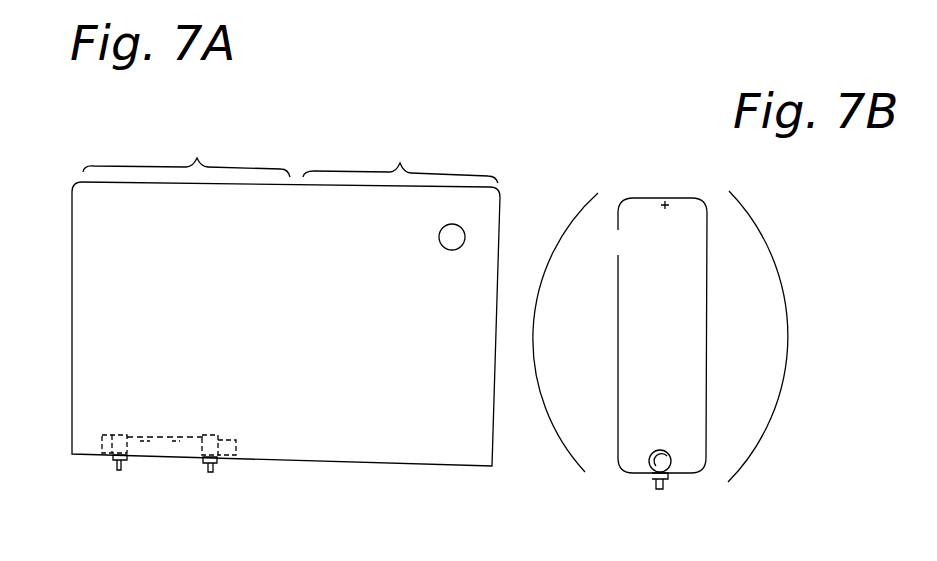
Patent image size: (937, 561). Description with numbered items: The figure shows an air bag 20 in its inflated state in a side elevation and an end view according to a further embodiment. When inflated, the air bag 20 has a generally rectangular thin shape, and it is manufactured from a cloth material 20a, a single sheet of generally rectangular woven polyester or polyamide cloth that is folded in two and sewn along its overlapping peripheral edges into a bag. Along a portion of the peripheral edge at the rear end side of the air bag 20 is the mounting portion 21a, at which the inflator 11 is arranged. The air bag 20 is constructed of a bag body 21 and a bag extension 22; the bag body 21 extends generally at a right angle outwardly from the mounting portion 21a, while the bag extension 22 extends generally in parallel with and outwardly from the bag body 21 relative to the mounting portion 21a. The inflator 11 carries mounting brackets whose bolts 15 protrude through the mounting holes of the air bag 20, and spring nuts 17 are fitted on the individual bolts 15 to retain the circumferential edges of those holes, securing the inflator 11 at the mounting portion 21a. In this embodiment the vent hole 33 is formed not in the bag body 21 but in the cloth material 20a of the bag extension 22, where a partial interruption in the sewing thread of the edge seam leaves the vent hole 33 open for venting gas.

In FIG. 7A, the air bag 20 is at (62, 318).
In FIG. 7B, the air bag 20 is at (608, 362).
In FIG. 7B, the cloth material 20a is at (620, 308).
In FIG. 7A, the bag body 21 is at (186, 151).
In FIG. 7A, the mounting portion 21a is at (190, 459).
In FIG. 7B, the mounting portion 21a is at (672, 474).
In FIG. 7A, the bag extension 22 is at (400, 157).
In FIG. 7A, the vent hole 33 is at (464, 237).
In FIG. 7B, the vent hole 33 is at (618, 248).
In FIG. 7A, the inflator 11 is at (150, 432).
In FIG. 7B, the inflator 11 is at (648, 461).
In FIG. 7A, the bolts 15 is at (113, 461).
In FIG. 7B, the bolts 15 is at (662, 483).
In FIG. 7A, the spring nuts 17 is at (126, 459).
In FIG. 7B, the spring nuts 17 is at (655, 480).